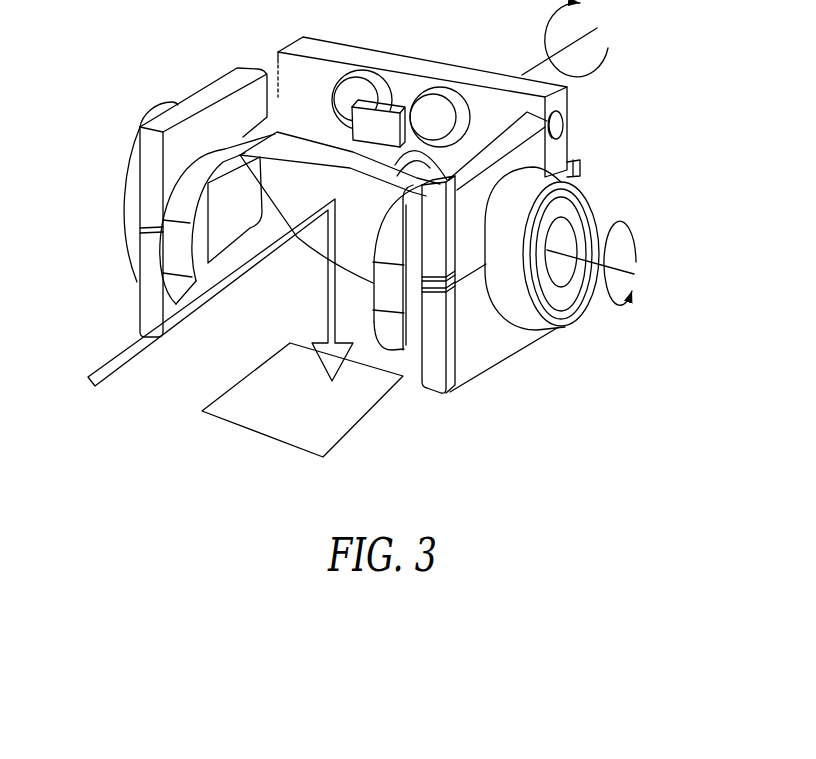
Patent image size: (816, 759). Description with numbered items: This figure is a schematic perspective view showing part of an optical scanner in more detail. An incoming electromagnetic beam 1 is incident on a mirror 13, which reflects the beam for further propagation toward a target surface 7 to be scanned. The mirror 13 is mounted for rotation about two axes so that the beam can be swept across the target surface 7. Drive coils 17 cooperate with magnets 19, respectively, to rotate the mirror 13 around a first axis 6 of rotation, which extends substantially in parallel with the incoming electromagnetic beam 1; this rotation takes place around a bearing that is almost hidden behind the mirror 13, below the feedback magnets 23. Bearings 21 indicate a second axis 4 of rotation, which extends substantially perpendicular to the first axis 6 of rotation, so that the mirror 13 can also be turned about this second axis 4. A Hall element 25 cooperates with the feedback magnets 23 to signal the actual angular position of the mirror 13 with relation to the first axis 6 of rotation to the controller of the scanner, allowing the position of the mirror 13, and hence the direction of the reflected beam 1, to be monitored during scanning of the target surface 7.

The electromagnetic beam 1 is at (133, 368).
The second axis of rotation 4 is at (626, 307).
The first axis of rotation 6 is at (571, 40).
The target surface 7 is at (290, 424).
The mirror 13 is at (282, 158).
The drive coils 17 is at (184, 261).
The magnets 19 is at (128, 289).
The bearings 21 is at (605, 212).
The feedback magnets 23 is at (375, 74).
The Hall element 25 is at (365, 121).